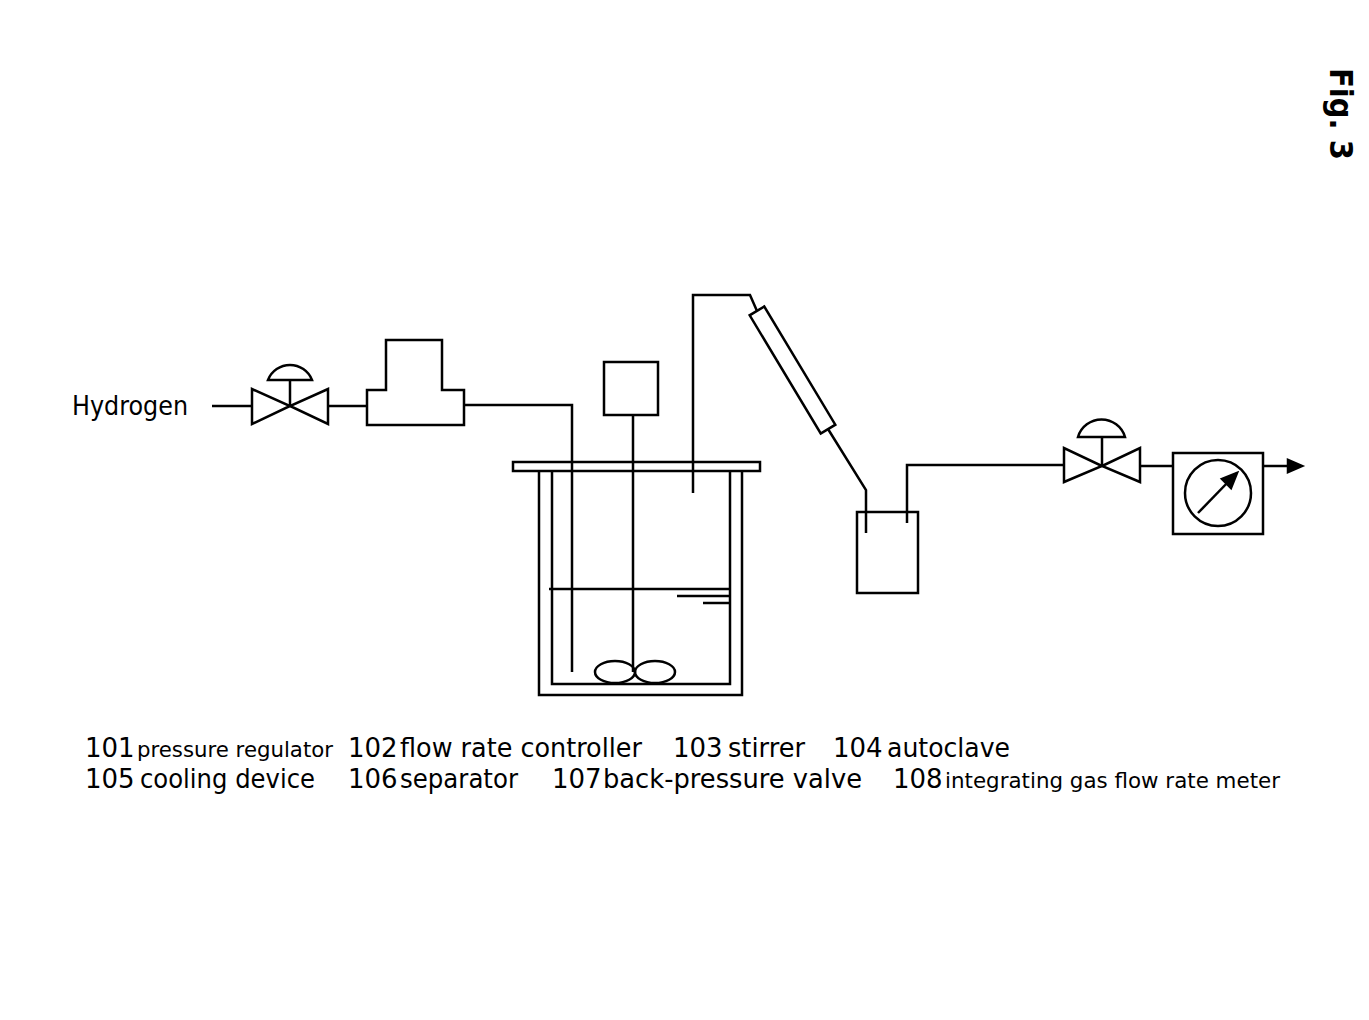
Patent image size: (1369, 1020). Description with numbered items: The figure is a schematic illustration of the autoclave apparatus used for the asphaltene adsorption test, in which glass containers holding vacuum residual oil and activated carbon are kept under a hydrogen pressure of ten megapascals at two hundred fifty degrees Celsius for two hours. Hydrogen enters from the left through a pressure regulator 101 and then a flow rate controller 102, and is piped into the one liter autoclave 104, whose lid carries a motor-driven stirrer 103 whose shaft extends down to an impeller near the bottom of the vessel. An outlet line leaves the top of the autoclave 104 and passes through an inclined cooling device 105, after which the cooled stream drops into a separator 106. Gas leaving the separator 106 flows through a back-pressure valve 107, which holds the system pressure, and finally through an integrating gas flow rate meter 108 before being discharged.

The pressure regulator 101 is at (290, 369).
The flow rate controller 102 is at (415, 363).
The stirrer 103 is at (635, 496).
The autoclave 104 is at (636, 578).
The cooling device 105 is at (808, 419).
The separator 106 is at (960, 501).
The back-pressure valve 107 is at (1102, 429).
The integrating gas flow rate meter 108 is at (1218, 470).